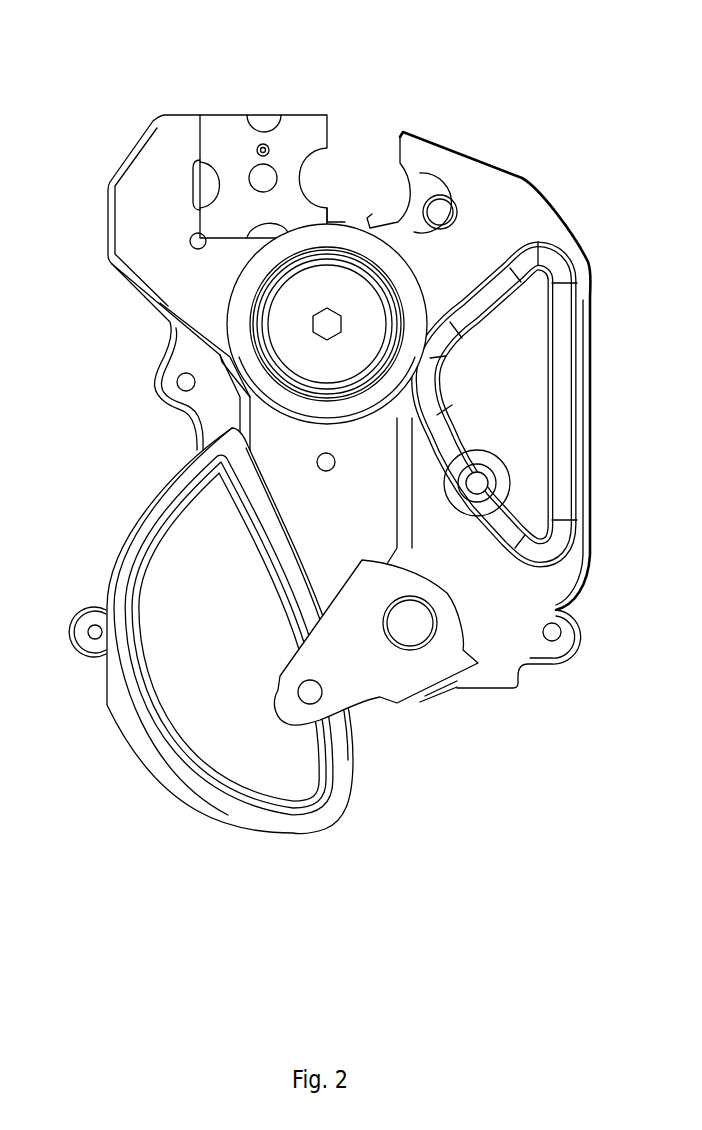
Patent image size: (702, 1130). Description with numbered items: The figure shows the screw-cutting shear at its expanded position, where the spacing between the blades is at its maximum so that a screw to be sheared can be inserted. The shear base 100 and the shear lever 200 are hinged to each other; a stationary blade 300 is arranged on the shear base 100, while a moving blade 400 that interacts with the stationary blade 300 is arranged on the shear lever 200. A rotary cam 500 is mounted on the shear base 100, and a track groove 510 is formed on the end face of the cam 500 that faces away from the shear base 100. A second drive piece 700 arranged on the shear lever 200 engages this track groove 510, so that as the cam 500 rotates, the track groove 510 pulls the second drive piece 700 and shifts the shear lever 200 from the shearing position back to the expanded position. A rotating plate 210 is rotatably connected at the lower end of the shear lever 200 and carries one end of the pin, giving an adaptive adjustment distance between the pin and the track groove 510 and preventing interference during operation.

The shear base 100 is at (160, 175).
The shear lever 200 is at (502, 193).
The rotating plate 210 is at (412, 680).
The stationary blade 300 is at (285, 135).
The moving blade 400 is at (413, 147).
The cam 500 is at (185, 695).
The track groove 510 is at (217, 745).
The second drive piece 700 is at (312, 697).